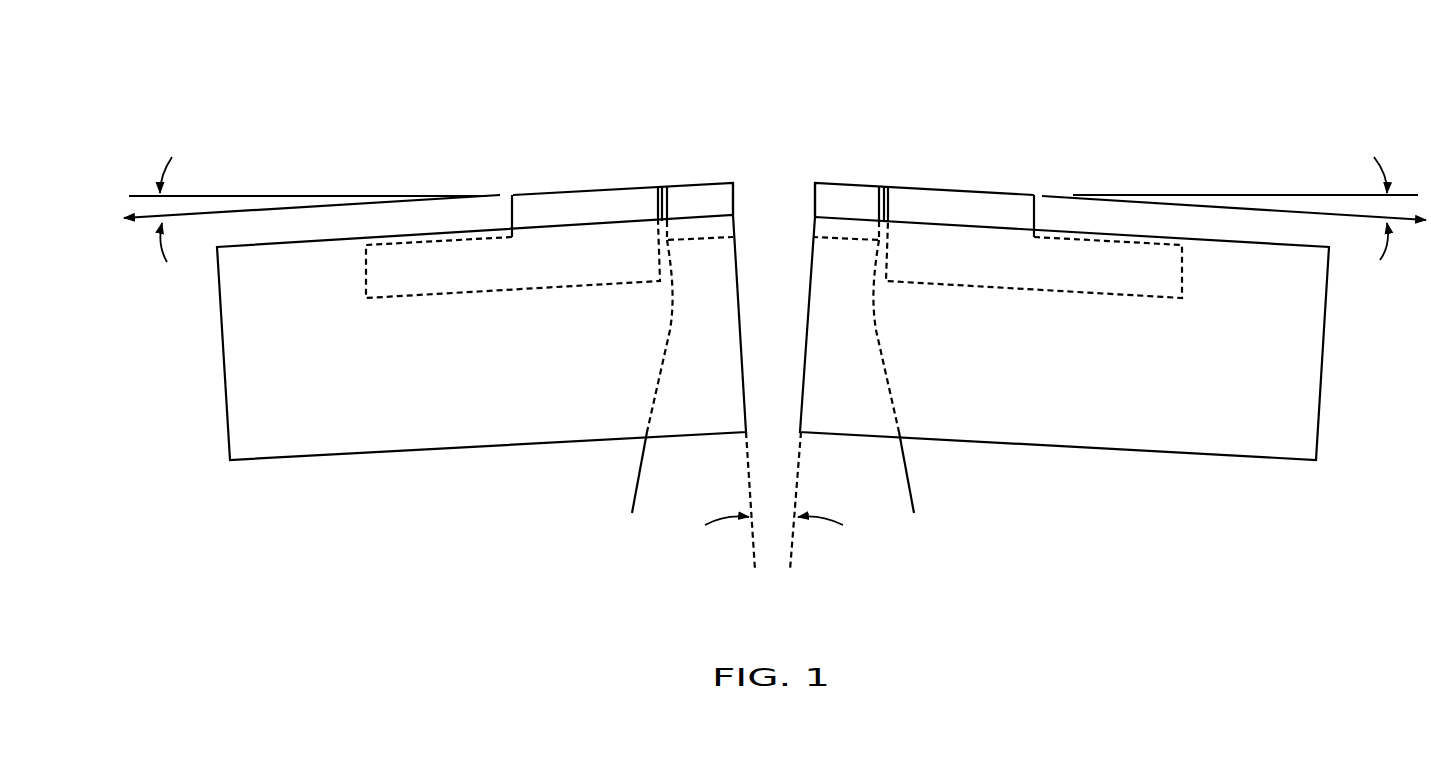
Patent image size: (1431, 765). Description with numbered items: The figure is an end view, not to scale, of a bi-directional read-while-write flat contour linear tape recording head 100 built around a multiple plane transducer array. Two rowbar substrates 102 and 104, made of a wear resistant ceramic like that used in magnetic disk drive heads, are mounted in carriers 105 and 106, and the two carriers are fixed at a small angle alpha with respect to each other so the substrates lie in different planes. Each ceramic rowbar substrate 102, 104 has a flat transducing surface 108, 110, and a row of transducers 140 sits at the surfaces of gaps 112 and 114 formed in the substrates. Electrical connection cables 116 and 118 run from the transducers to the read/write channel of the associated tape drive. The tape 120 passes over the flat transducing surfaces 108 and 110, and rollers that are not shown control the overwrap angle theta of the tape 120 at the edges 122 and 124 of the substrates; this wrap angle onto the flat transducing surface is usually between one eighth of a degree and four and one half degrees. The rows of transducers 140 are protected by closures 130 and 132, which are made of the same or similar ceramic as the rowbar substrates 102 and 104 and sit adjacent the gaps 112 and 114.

The flat contour head 100 is at (761, 322).
The rowbar substrate 102 is at (471, 295).
The rowbar substrate 104 is at (1032, 298).
The carrier 105 is at (228, 417).
The carrier 106 is at (1323, 370).
The flat transducing surface 108 is at (582, 190).
The flat transducing surface 110 is at (965, 190).
The gap 112 is at (657, 185).
The gap 114 is at (888, 185).
The electrical connection cable 116 is at (640, 467).
The electrical connection cable 118 is at (906, 466).
The tape 120 is at (150, 218).
The edge 122 is at (512, 193).
The edge 124 is at (1036, 195).
The closure 130 is at (710, 182).
The closure 132 is at (832, 182).
The transducers 140 is at (662, 183).